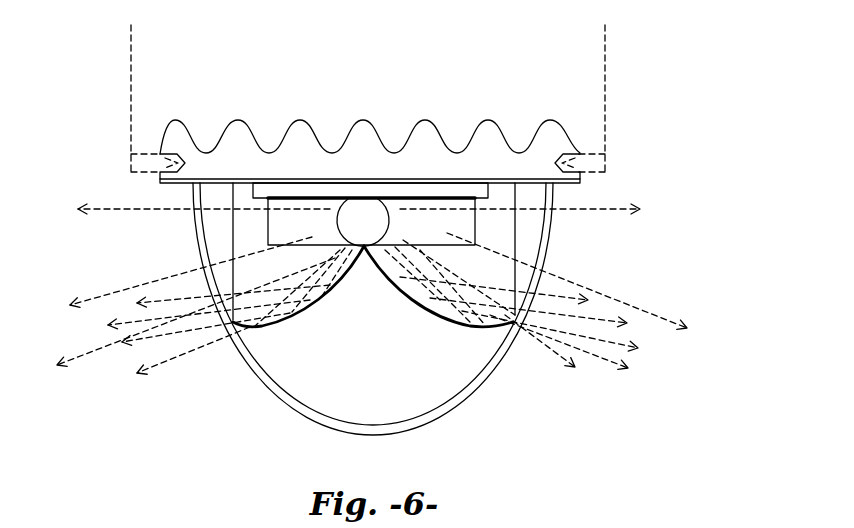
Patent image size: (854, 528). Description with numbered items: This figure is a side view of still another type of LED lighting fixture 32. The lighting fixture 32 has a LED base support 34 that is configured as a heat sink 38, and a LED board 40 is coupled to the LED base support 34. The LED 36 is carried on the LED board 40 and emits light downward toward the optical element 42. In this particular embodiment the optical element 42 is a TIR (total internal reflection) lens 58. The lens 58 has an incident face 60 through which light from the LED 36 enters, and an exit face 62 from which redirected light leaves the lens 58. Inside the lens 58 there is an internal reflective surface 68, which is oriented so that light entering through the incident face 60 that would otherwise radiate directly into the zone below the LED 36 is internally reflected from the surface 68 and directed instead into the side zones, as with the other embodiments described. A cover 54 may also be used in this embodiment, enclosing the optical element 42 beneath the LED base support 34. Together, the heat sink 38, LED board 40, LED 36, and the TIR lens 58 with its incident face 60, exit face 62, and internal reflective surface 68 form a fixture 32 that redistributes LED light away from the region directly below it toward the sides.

The lighting fixture 32 is at (670, 73).
The LED base support 34 is at (509, 70).
The LED 36 is at (370, 223).
The heat sink 38 is at (288, 147).
The LED board 40 is at (470, 190).
The optical element 42 is at (310, 322).
The cover 54 is at (487, 378).
The lens 58 is at (445, 298).
The incident face 60 is at (272, 222).
The exit face 62 is at (515, 220).
The internal reflective surface 68 is at (327, 298).